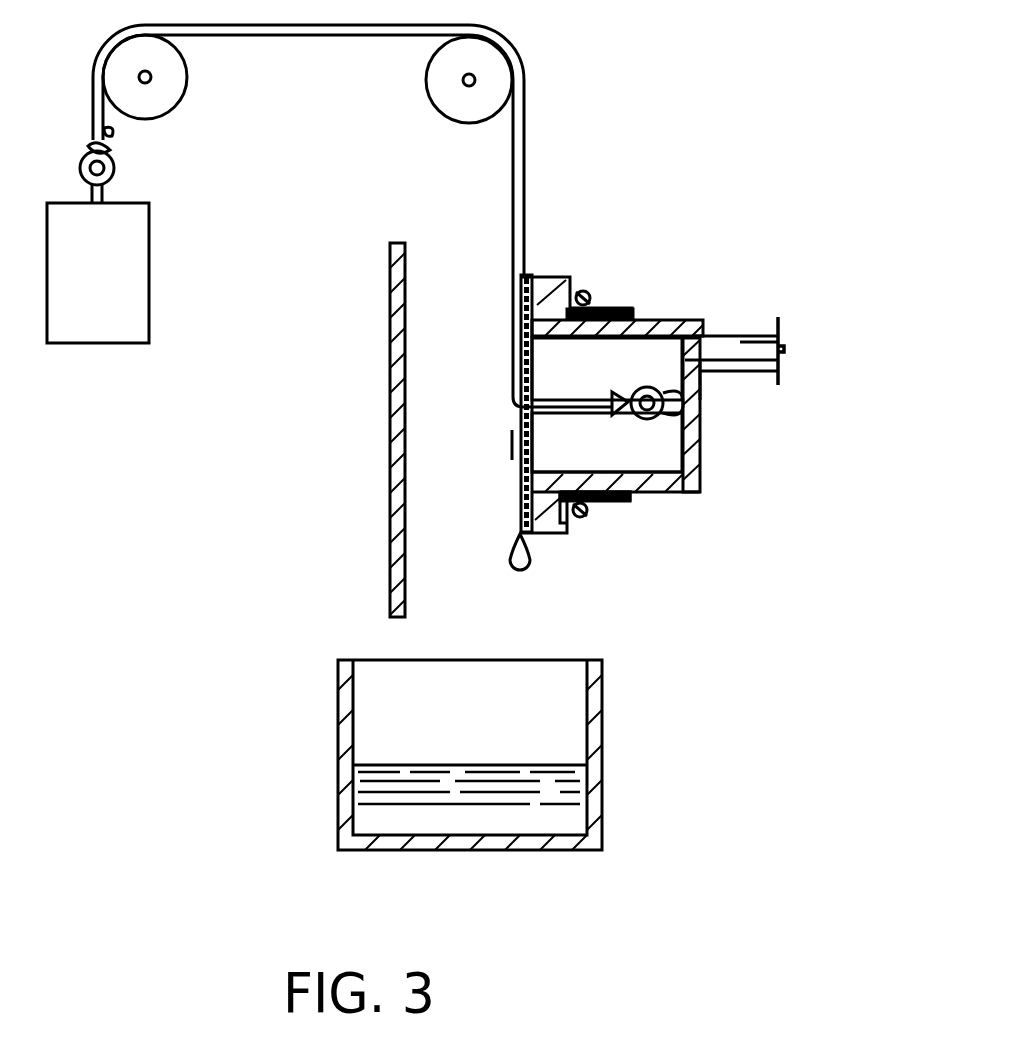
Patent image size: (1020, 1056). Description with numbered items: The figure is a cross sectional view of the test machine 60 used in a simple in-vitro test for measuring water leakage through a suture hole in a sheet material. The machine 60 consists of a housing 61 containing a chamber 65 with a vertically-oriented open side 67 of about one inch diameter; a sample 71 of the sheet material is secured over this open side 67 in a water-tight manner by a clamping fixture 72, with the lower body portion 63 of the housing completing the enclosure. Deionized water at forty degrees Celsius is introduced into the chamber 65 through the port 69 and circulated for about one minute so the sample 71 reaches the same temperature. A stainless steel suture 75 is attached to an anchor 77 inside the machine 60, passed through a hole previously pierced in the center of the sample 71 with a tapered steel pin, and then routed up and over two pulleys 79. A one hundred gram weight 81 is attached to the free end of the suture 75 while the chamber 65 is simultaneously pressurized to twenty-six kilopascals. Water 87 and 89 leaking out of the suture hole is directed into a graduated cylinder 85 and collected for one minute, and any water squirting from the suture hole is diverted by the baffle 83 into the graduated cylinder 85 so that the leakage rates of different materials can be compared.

The test machine 60 is at (680, 495).
The housing 61 is at (648, 318).
The lower body wall 63 is at (700, 453).
The chamber 65 is at (690, 320).
The open side 67 is at (518, 456).
The port 69 is at (752, 323).
The sample 71 is at (512, 442).
The clamping fixture 72 is at (580, 295).
The stainless steel suture 75 is at (523, 180).
The anchor 77 is at (700, 387).
The pulleys 79 is at (433, 110).
The weight 81 is at (150, 248).
The baffle 83 is at (388, 387).
The graduated cylinder 85 is at (338, 693).
The water 87 is at (508, 765).
The water 89 is at (531, 563).